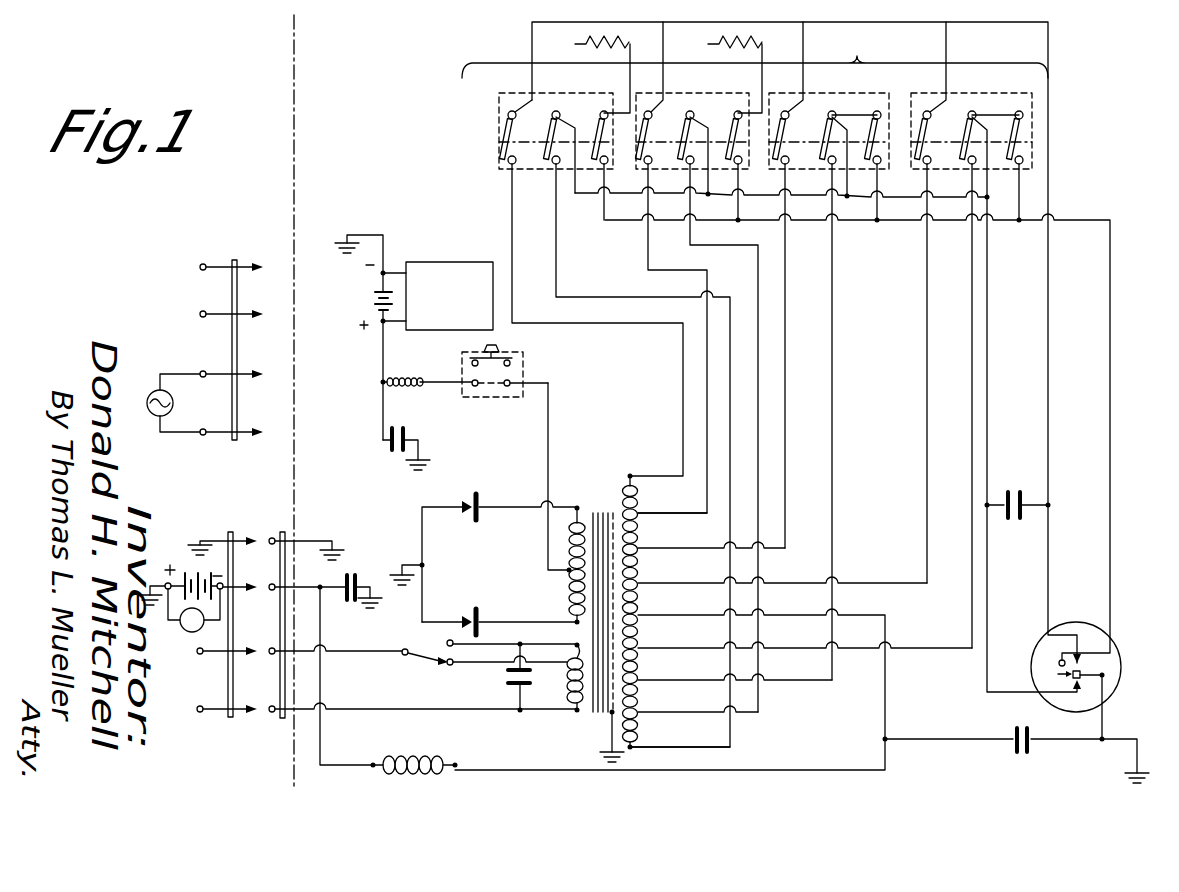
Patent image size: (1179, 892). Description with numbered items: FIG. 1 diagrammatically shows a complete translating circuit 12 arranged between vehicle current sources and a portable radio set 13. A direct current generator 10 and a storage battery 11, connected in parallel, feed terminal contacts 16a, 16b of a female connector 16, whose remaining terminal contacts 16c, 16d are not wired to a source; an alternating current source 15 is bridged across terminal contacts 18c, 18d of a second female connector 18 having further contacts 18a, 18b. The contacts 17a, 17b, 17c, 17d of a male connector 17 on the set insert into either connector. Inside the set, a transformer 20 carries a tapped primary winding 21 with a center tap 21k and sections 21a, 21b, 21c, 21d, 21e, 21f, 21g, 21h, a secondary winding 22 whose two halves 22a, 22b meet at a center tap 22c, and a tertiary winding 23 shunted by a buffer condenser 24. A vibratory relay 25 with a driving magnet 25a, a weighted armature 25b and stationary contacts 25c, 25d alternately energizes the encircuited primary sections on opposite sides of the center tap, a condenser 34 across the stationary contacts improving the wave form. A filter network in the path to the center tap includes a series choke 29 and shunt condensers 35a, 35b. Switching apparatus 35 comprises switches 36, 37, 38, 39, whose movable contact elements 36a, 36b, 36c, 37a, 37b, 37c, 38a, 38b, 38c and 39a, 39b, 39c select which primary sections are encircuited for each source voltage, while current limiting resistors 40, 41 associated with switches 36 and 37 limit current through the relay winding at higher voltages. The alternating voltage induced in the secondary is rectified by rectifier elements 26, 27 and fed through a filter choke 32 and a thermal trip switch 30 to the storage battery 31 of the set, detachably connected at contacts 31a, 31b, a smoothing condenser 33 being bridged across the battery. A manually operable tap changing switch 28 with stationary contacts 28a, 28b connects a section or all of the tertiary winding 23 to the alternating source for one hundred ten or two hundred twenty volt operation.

The direct current generator 10 is at (187, 633).
The storage battery 11 is at (190, 565).
The translating circuit 12 is at (609, 470).
The portable radio set 13 is at (448, 260).
The source of alternating current 15 is at (155, 390).
The female connector 16 is at (237, 514).
The terminal contact 16a is at (228, 551).
The terminal contact 16b is at (246, 597).
The terminal contact 16c is at (252, 648).
The terminal contact 16d is at (250, 716).
The male connector 17 is at (286, 530).
The contact 17a is at (271, 537).
The contact 17b is at (266, 575).
The contact 17c is at (271, 654).
The contact 17d is at (274, 713).
The female connector 18 is at (233, 262).
The terminal contact 18a is at (258, 262).
The terminal contact 18b is at (258, 310).
The terminal contact 18c is at (258, 370).
The terminal contact 18d is at (258, 428).
The transformer 20 is at (607, 496).
The tapped primary winding 21 is at (633, 475).
The primary winding section 21a is at (640, 493).
The primary winding section 21b is at (640, 735).
The primary winding section 21c is at (640, 540).
The primary winding section 21d is at (640, 708).
The winding tap 21e is at (640, 575).
The primary winding section 21f is at (640, 676).
The primary winding section 21g is at (640, 607).
The primary winding section 21h is at (640, 644).
The center tap 21k is at (670, 684).
The secondary winding 22 is at (585, 505).
The winding section 22a is at (568, 533).
The winding section 22b is at (568, 600).
The center tap 22c is at (566, 572).
The tertiary winding 23 is at (575, 705).
The buffer condenser 24 is at (518, 700).
The vibratory relay 25 is at (1122, 660).
The driving magnet 25a is at (1057, 660).
The weighted armature 25b is at (1056, 674).
The stationary contact 25c is at (1082, 660).
The stationary contact 25d is at (1082, 682).
The rectifier element 26 is at (479, 501).
The rectifier element 27 is at (470, 616).
The tap changing switch 28 is at (400, 665).
The stationary contact 28a is at (446, 672).
The stationary contact 28b is at (447, 642).
The inductance coil 29 is at (430, 751).
The thermal trip switch 30 is at (524, 376).
The storage battery 31 is at (372, 300).
The battery contact 31a is at (381, 323).
The battery contact 31b is at (380, 275).
The filter choke 32 is at (408, 378).
The smoothing condenser 33 is at (410, 438).
The condenser 34 is at (1008, 492).
The switching apparatus 35 is at (769, 342).
The shunt condenser 35a is at (1015, 741).
The shunt condenser 35b is at (358, 575).
The switch 36 is at (508, 92).
The switch arm 36a is at (548, 152).
The switch arm 36b is at (548, 168).
The switch arm 36c is at (605, 110).
The switch 37 is at (682, 100).
The movable contact element 37a is at (672, 312).
The movable contact element 37b is at (715, 405).
The movable contact element 37c is at (727, 159).
The switch 38 is at (835, 105).
The movable contact element 38a is at (841, 389).
The movable contact element 38b is at (798, 329).
The movable contact element 38c is at (864, 159).
The switch 39 is at (970, 105).
The movable contact element 39a is at (1012, 395).
The movable contact element 39b is at (937, 347).
The movable contact element 39c is at (1006, 159).
The current limiting resistor 40 is at (590, 44).
The current limiting resistor 41 is at (725, 44).